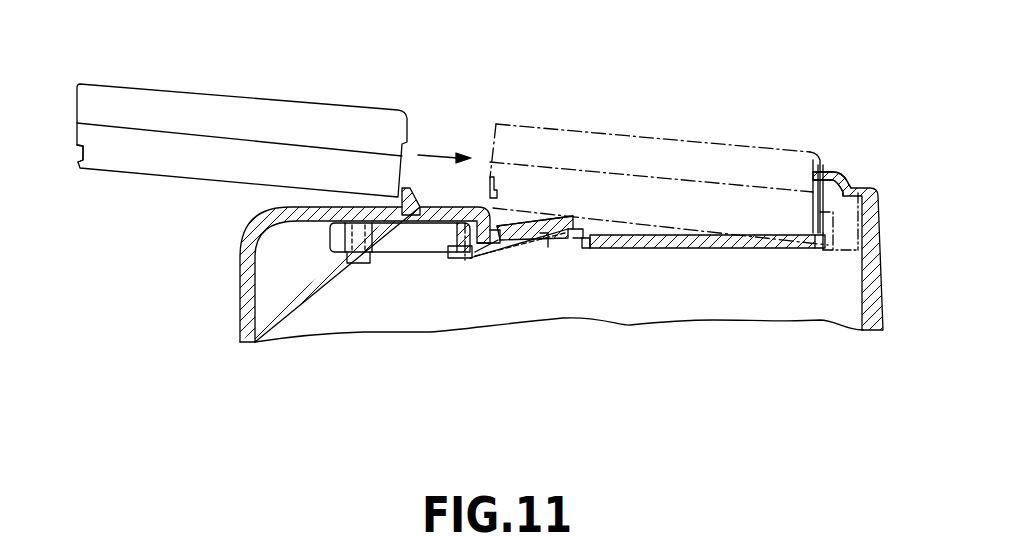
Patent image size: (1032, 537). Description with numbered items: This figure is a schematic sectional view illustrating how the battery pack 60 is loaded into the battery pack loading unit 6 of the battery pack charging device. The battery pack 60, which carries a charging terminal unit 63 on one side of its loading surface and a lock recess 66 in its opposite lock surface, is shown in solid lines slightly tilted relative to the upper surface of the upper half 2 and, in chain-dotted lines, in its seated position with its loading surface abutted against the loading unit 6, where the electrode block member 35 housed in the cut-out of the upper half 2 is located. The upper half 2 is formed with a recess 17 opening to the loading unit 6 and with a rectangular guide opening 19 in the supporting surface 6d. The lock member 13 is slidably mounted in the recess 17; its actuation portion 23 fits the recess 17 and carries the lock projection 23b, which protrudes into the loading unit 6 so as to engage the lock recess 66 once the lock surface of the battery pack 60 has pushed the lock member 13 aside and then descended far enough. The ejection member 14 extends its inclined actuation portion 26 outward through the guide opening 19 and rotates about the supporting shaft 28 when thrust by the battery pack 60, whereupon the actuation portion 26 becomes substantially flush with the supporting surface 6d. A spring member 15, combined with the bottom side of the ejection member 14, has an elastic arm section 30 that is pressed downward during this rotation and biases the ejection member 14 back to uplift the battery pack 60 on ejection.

The upper half 2 is at (870, 270).
The battery pack loading unit 6 is at (740, 205).
The supporting surface 6d is at (735, 250).
The lock member 13 is at (438, 241).
The ejection member 14 is at (835, 172).
The spring member 15 is at (427, 241).
The recess 17 is at (416, 224).
The guide opening 19 is at (586, 249).
The actuation portion 23 is at (468, 205).
The lock projection 23b is at (542, 220).
The actuation portion 26 is at (578, 215).
The supporting shaft 28 is at (465, 253).
The elastic arm section 30 is at (520, 250).
The electrode block member 35 is at (848, 210).
The battery pack 60 is at (337, 107).
The charging terminal unit 63 is at (406, 152).
The lock recess 66 is at (75, 156).